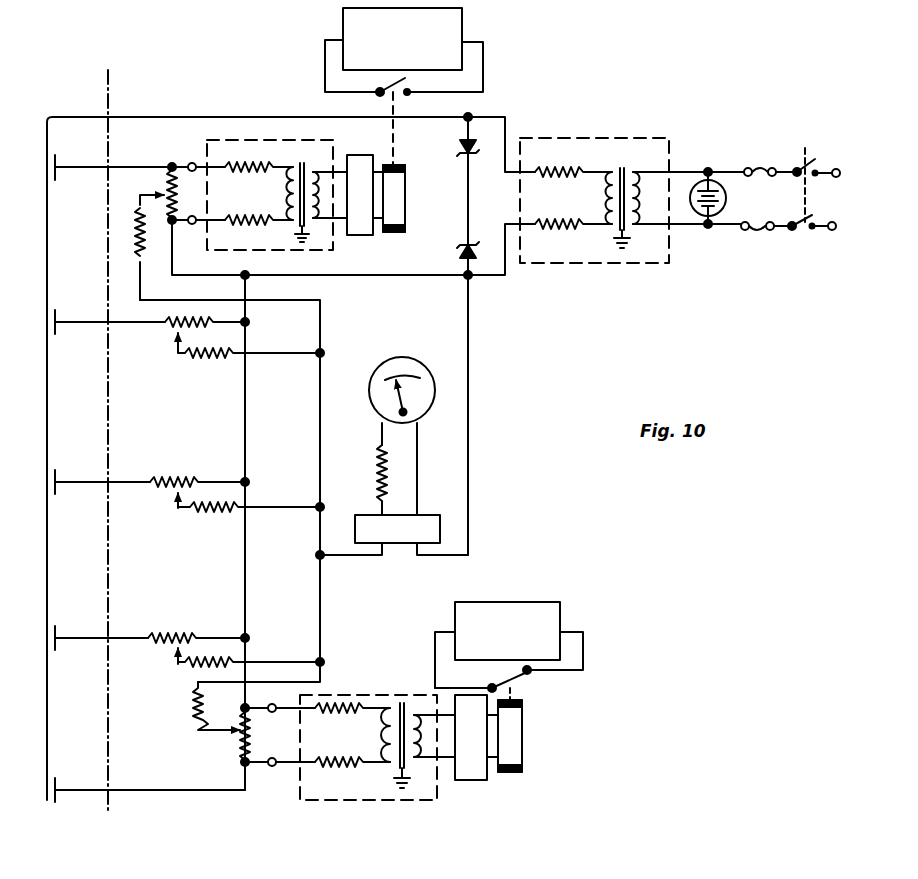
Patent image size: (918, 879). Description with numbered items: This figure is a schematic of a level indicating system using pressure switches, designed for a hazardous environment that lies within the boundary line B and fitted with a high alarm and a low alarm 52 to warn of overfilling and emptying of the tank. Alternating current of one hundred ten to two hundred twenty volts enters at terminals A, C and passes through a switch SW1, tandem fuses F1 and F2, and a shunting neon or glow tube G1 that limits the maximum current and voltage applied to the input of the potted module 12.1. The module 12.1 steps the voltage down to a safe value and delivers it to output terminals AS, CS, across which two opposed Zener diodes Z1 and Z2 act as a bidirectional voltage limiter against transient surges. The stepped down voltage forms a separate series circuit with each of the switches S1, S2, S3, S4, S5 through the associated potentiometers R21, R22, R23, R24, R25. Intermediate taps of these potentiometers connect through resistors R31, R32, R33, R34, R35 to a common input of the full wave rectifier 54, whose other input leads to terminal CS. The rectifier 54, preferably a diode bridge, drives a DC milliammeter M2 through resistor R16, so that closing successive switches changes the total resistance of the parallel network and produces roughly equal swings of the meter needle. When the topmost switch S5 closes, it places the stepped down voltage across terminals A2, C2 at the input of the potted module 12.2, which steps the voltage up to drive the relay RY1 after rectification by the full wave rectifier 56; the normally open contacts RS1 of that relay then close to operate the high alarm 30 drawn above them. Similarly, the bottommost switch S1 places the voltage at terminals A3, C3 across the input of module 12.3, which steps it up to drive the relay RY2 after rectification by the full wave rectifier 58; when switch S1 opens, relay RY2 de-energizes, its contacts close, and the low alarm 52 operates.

The boundary line B is at (104, 84).
The topmost switch S5 is at (113, 155).
The switch S4 is at (110, 343).
The switch S3 is at (102, 470).
The switch S2 is at (101, 623).
The bottommost switch S1 is at (150, 777).
The potentiometer R25 is at (163, 185).
The resistor R35 is at (138, 240).
The terminal A2 is at (193, 162).
The terminal C2 is at (192, 225).
The potted module 12.2 is at (255, 138).
The full wave rectifier 56 is at (372, 146).
The relay RY1 is at (400, 212).
The high alarm 30 is at (462, 24).
The normally open contacts RS1 is at (415, 82).
The Zener diode Z1 is at (451, 163).
The Zener diode Z2 is at (447, 254).
The output terminal AS is at (503, 102).
The output terminal CS is at (501, 299).
The potted module 12.1 is at (635, 118).
The shunting neon or glow tube G1 is at (703, 226).
The fuse F1 is at (754, 166).
The fuse F2 is at (756, 232).
The switch SW1 is at (806, 150).
The terminal A is at (846, 174).
The terminal C is at (843, 228).
The potentiometer R24 is at (182, 347).
The resistor R34 is at (202, 360).
The potentiometer R23 is at (186, 478).
The resistor R33 is at (191, 512).
The potentiometer R22 is at (196, 610).
The resistor R32 is at (188, 670).
The resistor R31 is at (194, 714).
The potentiometer R21 is at (240, 751).
The terminal A3 is at (282, 724).
The terminal C3 is at (282, 776).
The DC milliammeter M2 is at (424, 370).
The resistor R16 is at (375, 474).
The full wave rectifier 54 is at (445, 522).
The low alarm 52 is at (537, 602).
The potted module 12.3 is at (400, 674).
The full wave rectifier 58 is at (465, 780).
The relay RY2 is at (522, 728).